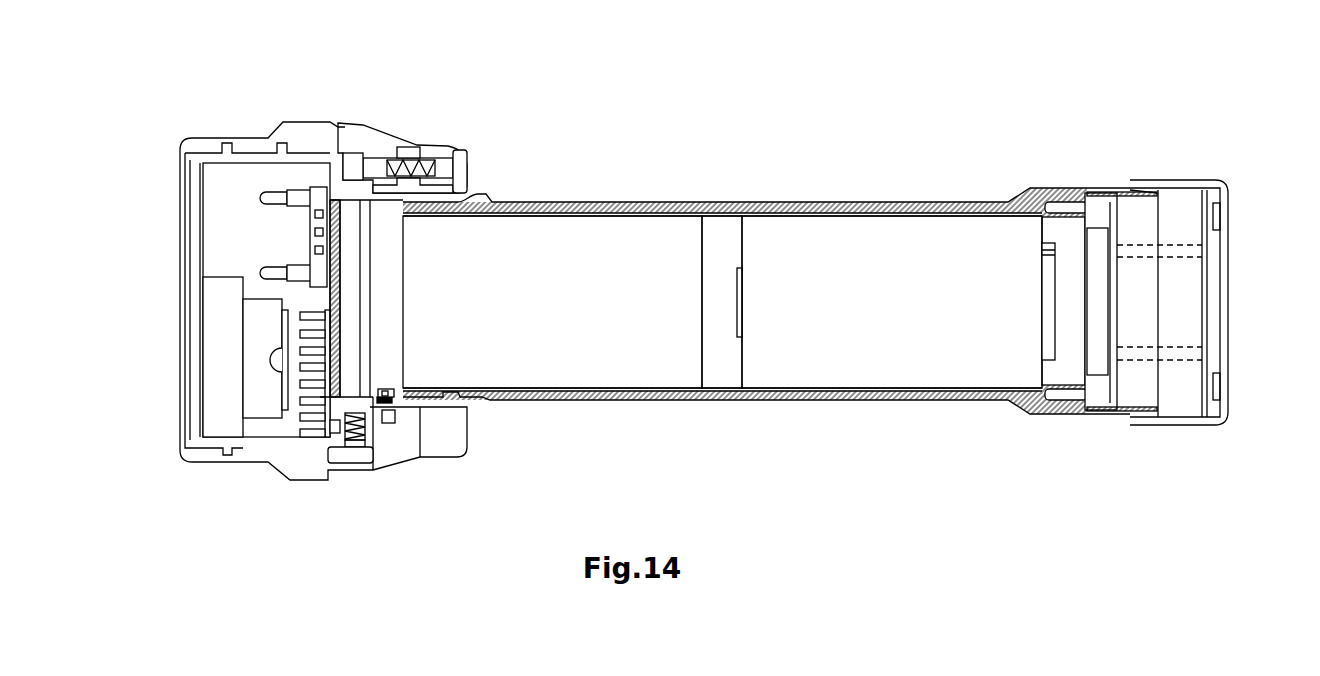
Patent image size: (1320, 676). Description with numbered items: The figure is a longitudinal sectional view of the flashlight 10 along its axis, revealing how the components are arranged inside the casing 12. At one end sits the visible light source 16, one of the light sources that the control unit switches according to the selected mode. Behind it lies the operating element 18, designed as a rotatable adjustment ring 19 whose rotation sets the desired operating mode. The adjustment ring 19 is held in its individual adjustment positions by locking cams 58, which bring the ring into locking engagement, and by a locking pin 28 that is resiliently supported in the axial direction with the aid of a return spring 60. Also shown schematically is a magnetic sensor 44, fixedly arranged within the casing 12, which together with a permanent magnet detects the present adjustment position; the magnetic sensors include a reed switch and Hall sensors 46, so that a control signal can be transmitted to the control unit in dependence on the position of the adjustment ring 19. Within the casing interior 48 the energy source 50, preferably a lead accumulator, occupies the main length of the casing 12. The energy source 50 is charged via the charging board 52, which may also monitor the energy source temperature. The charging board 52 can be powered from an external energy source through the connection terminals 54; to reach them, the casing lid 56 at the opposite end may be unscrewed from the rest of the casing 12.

The flashlight 10 is at (802, 110).
The casing 12 is at (884, 206).
The visible light source 16 is at (303, 328).
The operating element 18 is at (403, 118).
The adjustment ring 19 is at (366, 127).
The locking pin 28 is at (455, 168).
The magnetic sensor 44 is at (403, 398).
The Hall sensors 46 is at (382, 402).
The casing interior 48 is at (720, 388).
The energy source 50 is at (821, 342).
The charging board 52 is at (1113, 398).
The connection terminals 54 is at (1174, 250).
The casing lid 56 is at (1223, 277).
The locking cams 58 is at (348, 457).
The return spring 60 is at (373, 168).